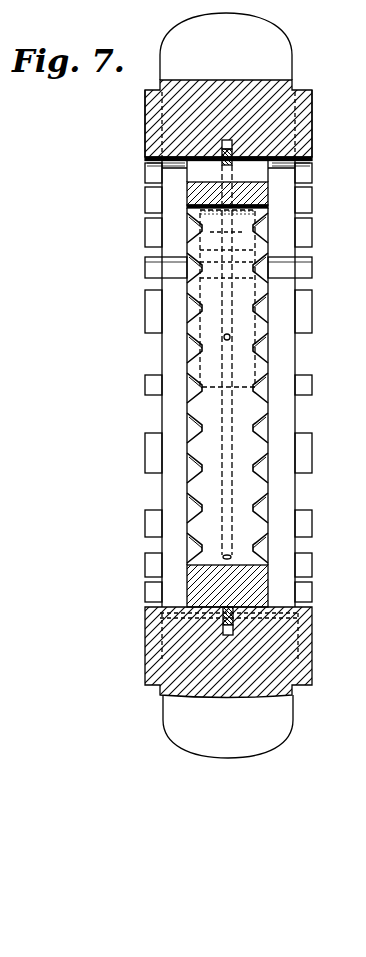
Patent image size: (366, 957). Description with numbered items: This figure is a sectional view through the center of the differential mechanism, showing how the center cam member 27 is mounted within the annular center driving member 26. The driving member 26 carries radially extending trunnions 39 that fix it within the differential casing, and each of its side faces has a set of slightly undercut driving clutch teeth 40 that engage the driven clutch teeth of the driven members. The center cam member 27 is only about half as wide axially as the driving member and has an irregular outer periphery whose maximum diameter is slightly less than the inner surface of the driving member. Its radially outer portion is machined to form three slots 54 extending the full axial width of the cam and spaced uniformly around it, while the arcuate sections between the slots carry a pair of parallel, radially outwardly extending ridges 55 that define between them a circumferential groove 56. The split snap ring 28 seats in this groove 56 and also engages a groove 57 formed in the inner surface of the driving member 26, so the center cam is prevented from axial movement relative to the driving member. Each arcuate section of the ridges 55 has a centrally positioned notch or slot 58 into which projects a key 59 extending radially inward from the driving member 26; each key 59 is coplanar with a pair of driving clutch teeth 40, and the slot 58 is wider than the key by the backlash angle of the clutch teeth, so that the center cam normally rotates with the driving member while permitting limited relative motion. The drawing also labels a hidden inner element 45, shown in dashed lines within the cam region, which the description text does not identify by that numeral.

The center driving member 26 is at (296, 74).
The groove 57 is at (226, 140).
The snap ring 28 is at (220, 156).
The ridges 55 is at (213, 158).
The slots 54 is at (215, 174).
The groove 56 is at (240, 169).
The driving clutch teeth 40 is at (308, 383).
The center cam member 27 is at (278, 423).
The inner rod 45 is at (195, 379).
The key 59 is at (180, 606).
The notch or slot 58 is at (200, 618).
The trunnions 39 is at (183, 722).